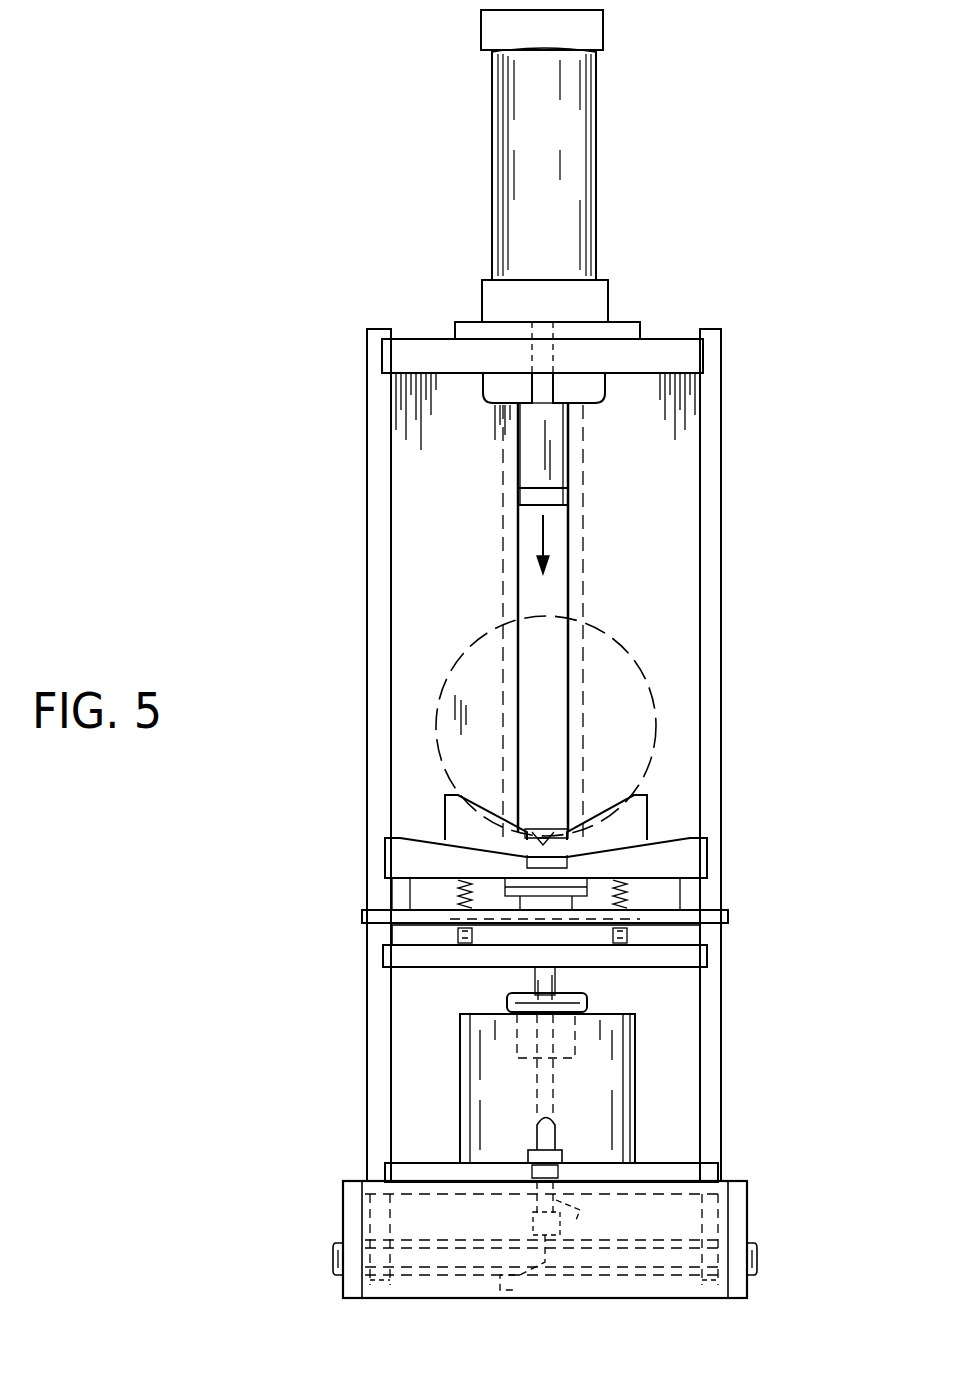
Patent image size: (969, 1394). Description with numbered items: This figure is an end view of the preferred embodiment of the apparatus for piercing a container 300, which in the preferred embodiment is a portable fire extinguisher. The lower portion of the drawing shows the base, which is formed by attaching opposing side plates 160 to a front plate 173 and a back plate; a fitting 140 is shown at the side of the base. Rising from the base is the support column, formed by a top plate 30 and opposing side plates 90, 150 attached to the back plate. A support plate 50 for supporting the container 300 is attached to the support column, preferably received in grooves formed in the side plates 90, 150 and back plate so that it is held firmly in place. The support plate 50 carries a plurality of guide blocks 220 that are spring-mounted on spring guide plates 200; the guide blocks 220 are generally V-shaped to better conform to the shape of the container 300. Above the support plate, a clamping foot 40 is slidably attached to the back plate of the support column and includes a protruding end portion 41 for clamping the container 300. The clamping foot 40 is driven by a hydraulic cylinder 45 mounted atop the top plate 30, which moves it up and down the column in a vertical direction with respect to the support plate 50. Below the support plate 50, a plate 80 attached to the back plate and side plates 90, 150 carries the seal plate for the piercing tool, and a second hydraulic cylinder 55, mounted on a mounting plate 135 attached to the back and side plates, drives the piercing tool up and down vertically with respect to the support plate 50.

The hydraulic cylinder 45 is at (596, 156).
The top plate 30 is at (648, 352).
The side plate 150 is at (372, 566).
The side plate 90 is at (721, 553).
The clamping foot 40 is at (550, 433).
The protruding end portion 41 is at (565, 510).
The container 300 is at (660, 705).
The guide blocks 220 is at (632, 817).
The support plate 50 is at (693, 858).
The spring guide plates 200 is at (708, 918).
The plate 80 is at (683, 955).
The hydraulic cylinder 55 is at (593, 1073).
The mounting plate 135 is at (688, 1170).
The side plates 160 is at (352, 1203).
The side fitting 140 is at (343, 1258).
The front plate 173 is at (677, 1220).